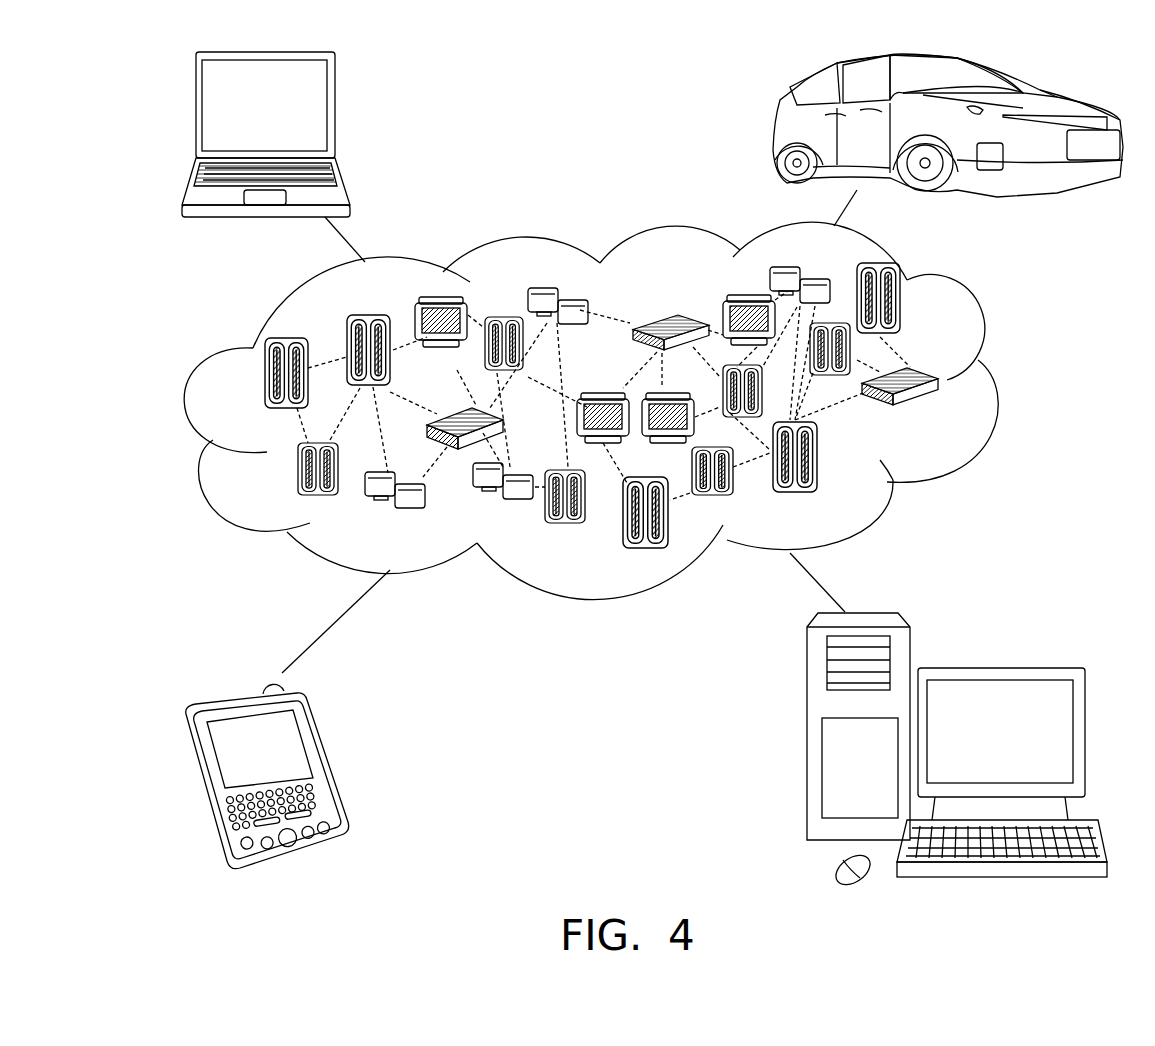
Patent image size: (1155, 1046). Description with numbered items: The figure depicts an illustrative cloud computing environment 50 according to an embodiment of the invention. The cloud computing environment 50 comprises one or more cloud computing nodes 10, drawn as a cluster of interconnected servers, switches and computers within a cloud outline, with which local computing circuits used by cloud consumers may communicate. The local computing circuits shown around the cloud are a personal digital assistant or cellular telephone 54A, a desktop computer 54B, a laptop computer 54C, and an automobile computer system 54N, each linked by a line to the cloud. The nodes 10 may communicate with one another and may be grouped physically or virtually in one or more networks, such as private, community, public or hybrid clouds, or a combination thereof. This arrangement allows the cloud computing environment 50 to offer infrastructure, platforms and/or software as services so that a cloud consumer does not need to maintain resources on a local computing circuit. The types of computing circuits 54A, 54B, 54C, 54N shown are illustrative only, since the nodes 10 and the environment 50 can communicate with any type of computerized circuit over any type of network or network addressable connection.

The cloud computing node 10 is at (948, 415).
The cloud computing environment 50 is at (622, 410).
The personal digital assistant or cellular telephone 54A is at (294, 776).
The desktop computer 54B is at (957, 752).
The laptop computer 54C is at (297, 134).
The automobile computer system 54N is at (911, 125).